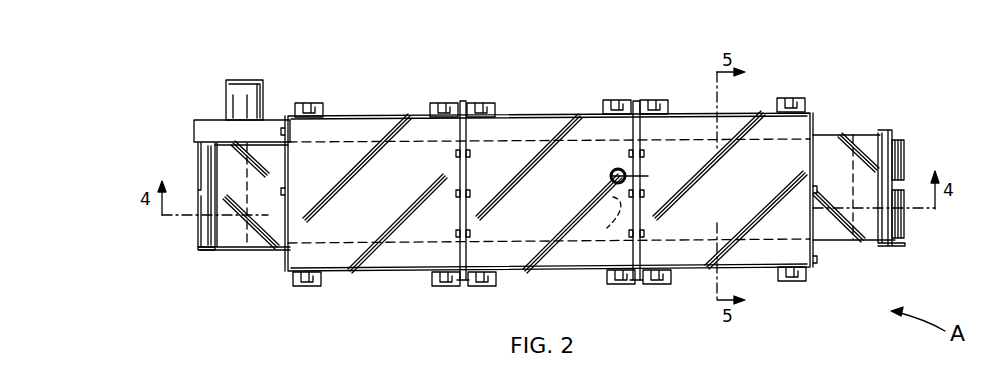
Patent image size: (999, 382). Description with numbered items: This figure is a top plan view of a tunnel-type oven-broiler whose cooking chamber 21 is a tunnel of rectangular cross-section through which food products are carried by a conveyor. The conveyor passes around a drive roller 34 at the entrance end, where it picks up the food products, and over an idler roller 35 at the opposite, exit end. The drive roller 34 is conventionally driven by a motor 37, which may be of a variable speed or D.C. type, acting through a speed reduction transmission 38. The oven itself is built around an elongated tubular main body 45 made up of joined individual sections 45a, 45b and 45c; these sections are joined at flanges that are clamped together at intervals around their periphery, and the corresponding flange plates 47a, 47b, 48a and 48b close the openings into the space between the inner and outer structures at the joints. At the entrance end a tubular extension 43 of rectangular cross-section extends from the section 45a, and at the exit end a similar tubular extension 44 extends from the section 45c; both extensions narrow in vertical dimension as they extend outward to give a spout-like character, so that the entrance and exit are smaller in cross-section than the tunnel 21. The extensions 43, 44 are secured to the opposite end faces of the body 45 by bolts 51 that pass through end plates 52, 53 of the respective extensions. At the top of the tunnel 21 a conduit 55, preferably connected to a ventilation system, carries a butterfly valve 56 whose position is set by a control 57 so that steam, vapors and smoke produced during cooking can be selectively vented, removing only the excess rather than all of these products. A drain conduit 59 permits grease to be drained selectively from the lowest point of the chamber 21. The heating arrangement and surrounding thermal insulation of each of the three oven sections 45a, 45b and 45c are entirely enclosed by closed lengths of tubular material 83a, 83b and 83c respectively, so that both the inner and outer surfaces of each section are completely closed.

The cooking chamber 21 is at (408, 240).
The drive roller 34 is at (197, 192).
The idler roller 35 is at (903, 187).
The motor 37 is at (228, 82).
The speed reduction transmission 38 is at (193, 120).
The tubular extension 43 is at (236, 247).
The tubular extension 44 is at (843, 243).
The tubular main body 45 is at (770, 284).
The oven section 45a is at (378, 110).
The oven section 45b is at (528, 103).
The oven section 45c is at (696, 90).
The flange plate 47a is at (462, 250).
The flange plate 47b is at (462, 250).
The flange plate 48a is at (637, 250).
The flange plate 48b is at (637, 250).
The bolt 51 is at (289, 197).
The end plate 52 is at (288, 258).
The end plate 53 is at (818, 150).
The conduit 55 is at (610, 174).
The butterfly valve 56 is at (610, 180).
The control 57 is at (648, 176).
The drain conduit 59 is at (601, 215).
The tubular material 83a is at (346, 273).
The tubular material 83b is at (538, 272).
The tubular material 83c is at (693, 270).